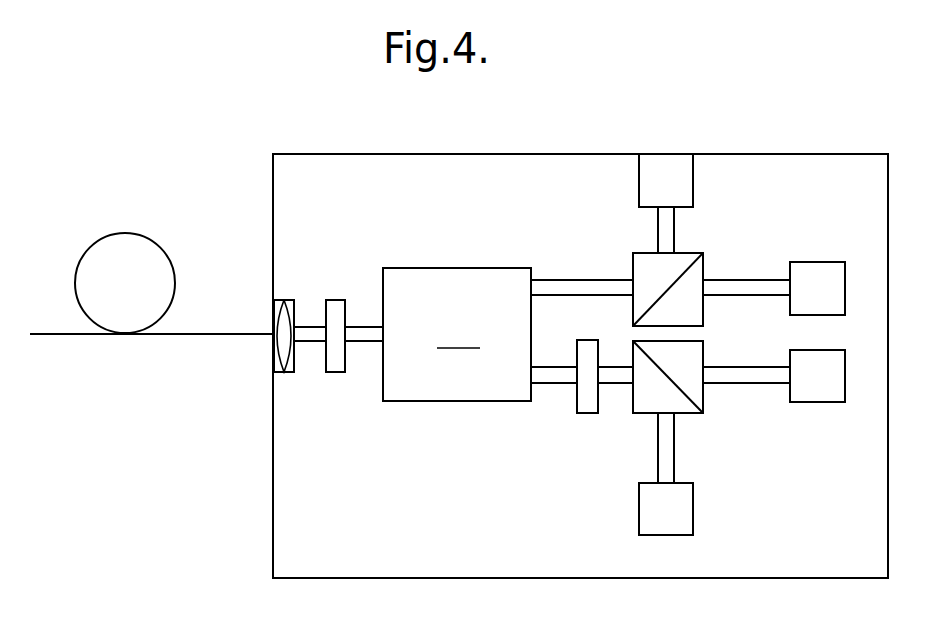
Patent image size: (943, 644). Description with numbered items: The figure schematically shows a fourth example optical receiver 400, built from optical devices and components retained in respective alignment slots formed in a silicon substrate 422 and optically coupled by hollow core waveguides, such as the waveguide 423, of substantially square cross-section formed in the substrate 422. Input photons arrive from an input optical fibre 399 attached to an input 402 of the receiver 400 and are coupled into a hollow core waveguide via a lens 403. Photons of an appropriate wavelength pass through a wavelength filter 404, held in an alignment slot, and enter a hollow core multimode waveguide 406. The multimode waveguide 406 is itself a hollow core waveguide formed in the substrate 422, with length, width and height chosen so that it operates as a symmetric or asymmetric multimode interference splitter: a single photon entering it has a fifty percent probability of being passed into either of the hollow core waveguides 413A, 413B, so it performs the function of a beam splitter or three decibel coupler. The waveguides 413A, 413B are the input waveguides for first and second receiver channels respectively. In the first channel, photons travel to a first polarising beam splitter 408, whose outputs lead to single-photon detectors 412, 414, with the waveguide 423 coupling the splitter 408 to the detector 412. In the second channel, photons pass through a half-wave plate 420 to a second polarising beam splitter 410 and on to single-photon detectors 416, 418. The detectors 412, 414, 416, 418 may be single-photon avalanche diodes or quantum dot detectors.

The input optical fibre 399 is at (126, 246).
The optical receiver 400 is at (860, 153).
The input 402 is at (270, 337).
The lens 403 is at (276, 316).
The wavelength filter 404 is at (335, 372).
The hollow core multimode waveguide 406 is at (457, 334).
The first polarising beam splitter 408 is at (683, 306).
The second polarising beam splitter 410 is at (690, 383).
The single-photon detector 412 is at (820, 270).
The hollow core waveguide 413A is at (548, 387).
The hollow core waveguide 413B is at (581, 285).
The single-photon detector 414 is at (666, 162).
The single-photon detector 416 is at (688, 507).
The single-photon detector 418 is at (818, 392).
The half-wave plate 420 is at (588, 413).
The silicon substrate 422 is at (858, 555).
The hollow core waveguide 423 is at (755, 283).